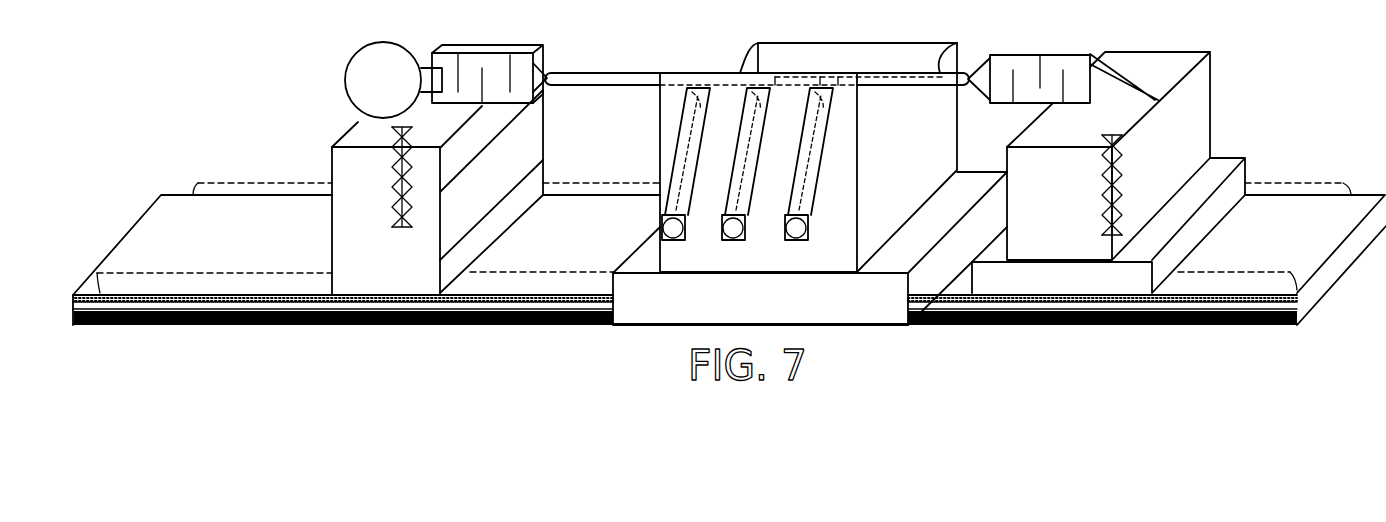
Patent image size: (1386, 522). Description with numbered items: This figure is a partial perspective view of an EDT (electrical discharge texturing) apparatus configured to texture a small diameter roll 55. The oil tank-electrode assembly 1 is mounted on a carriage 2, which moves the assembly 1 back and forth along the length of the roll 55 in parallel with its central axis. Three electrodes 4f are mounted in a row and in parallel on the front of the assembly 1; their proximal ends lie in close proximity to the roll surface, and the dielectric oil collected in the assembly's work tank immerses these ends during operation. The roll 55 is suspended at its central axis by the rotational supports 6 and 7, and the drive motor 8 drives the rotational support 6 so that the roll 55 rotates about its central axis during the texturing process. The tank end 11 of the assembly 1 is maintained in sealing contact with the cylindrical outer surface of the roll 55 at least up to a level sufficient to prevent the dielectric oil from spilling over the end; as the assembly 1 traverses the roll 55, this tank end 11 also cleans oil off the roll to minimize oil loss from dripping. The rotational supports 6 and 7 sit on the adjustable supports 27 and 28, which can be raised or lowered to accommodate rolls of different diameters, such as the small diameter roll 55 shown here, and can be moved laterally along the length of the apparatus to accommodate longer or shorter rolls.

The oil tank-electrode assembly 1 is at (667, 143).
The carriage 2 is at (877, 307).
The electrodes 4f is at (685, 240).
The rotational support 6 is at (450, 78).
The rotational support 7 is at (1050, 72).
The drive motor 8 is at (391, 93).
The tank end 11 is at (922, 133).
The adjustable support 27 is at (1182, 142).
The adjustable support 28 is at (343, 167).
The small diameter roll 55 is at (584, 78).